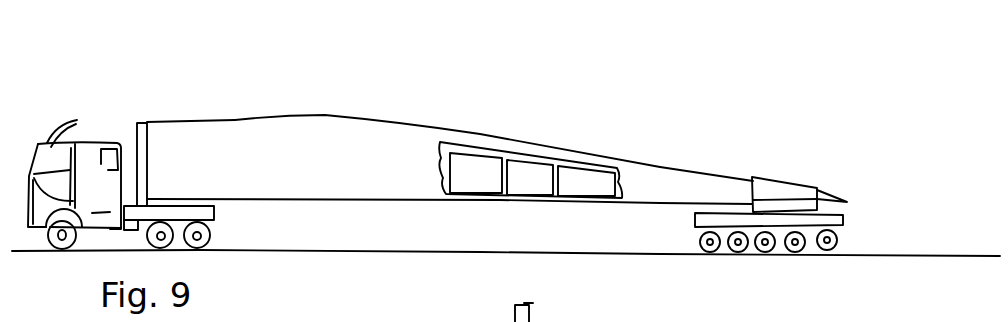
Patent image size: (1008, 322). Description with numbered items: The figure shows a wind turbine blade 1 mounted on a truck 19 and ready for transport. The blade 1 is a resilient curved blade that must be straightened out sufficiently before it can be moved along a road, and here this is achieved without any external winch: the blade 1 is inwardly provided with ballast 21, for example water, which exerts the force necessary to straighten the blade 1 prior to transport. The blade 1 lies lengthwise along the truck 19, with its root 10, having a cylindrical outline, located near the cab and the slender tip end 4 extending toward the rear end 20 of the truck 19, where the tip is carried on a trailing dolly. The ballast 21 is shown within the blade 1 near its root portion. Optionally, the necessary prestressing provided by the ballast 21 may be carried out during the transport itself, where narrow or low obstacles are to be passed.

The wind turbine blade 1 is at (233, 145).
The tip end 4 is at (710, 190).
The root 10 is at (175, 147).
The truck 19 is at (87, 163).
The rear end 20 is at (788, 137).
The ballast 21 is at (588, 178).